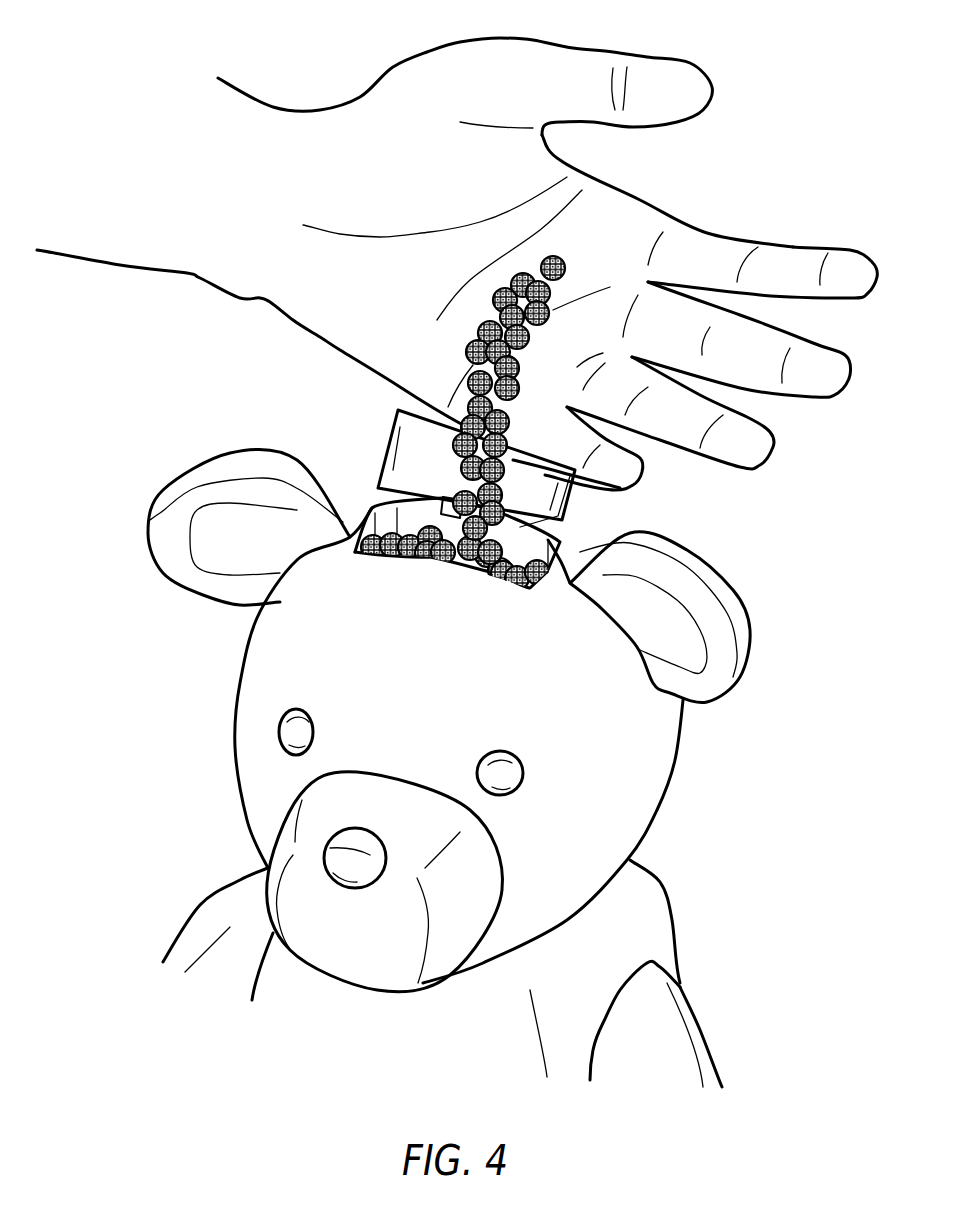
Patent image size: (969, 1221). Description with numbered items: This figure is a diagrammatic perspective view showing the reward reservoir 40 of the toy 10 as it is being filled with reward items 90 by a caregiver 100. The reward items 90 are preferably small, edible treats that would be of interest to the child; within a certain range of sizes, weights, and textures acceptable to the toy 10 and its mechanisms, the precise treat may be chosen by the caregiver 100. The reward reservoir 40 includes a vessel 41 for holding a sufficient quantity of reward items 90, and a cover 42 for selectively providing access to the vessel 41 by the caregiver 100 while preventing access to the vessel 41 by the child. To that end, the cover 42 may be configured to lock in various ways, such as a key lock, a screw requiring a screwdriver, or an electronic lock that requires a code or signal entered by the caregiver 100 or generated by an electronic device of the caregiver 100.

The toy 10 is at (180, 801).
The reward reservoir 40 is at (560, 540).
The vessel 41 is at (377, 497).
The cover 42 is at (392, 440).
The reward items 90 is at (462, 372).
The caregiver 100 is at (132, 273).